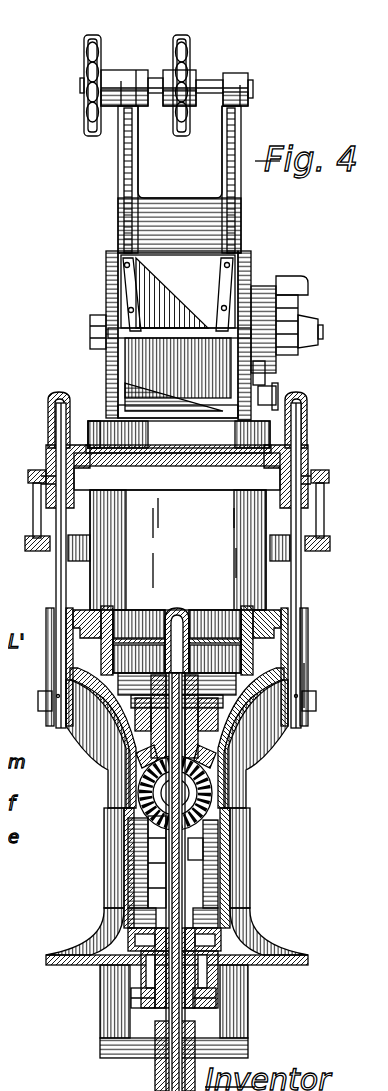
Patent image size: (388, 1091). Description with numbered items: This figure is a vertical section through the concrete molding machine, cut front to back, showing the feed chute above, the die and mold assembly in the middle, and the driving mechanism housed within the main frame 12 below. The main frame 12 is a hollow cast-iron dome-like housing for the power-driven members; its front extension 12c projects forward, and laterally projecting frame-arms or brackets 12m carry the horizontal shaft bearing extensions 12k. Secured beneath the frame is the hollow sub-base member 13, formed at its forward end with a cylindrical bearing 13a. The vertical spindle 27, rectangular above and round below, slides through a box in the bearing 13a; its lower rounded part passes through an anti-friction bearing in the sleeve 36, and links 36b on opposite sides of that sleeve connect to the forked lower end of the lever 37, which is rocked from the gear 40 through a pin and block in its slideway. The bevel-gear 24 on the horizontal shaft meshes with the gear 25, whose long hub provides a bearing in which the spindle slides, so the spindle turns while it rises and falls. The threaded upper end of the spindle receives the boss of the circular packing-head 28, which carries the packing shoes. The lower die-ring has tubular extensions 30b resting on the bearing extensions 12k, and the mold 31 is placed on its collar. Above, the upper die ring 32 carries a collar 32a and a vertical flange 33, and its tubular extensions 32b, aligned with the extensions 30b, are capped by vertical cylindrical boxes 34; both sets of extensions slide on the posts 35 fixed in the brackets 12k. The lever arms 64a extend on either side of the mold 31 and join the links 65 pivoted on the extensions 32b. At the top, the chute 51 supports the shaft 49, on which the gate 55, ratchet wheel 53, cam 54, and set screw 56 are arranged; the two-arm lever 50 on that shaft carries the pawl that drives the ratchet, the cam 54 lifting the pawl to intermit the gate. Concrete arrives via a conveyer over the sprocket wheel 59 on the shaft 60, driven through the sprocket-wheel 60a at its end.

The sprocket-wheel 60a is at (79, 128).
The sprocket wheel 59 is at (168, 128).
The shaft 60 is at (200, 86).
The chute 51 is at (233, 209).
The gate 55 is at (170, 335).
The ratchet wheel 53 is at (268, 360).
The 2-arm lever 50 is at (300, 283).
The shaft 49 is at (315, 325).
The cam 54 is at (257, 375).
The set screw 56 is at (265, 406).
The vertical cylindrical boxes 34 is at (40, 402).
The vertical flange 33 is at (80, 413).
The collar 32a is at (179, 435).
The tubular extensions 32b is at (300, 445).
The upper die ring 32 is at (148, 458).
The posts 35 is at (48, 575).
The mold 31 is at (178, 550).
The links 65 is at (312, 497).
The arms 64a is at (262, 530).
The tubular extensions 30b is at (300, 636).
The horizontal shaft bearing 12k is at (300, 670).
The circular packing-head 28 is at (198, 641).
The frame-arms or brackets 12m is at (67, 720).
The front extension 12c is at (222, 832).
The main frame 12 is at (240, 878).
The bevel-gear 24 is at (200, 790).
The gear 25 is at (205, 757).
The vertical spindle 27 is at (165, 845).
The gear 40 is at (190, 848).
The links 36b is at (205, 948).
The sleeve 36 is at (130, 958).
The lever 37 is at (190, 1005).
The hollow sub-base member 13 is at (232, 987).
The cylindrical bearing 13a is at (152, 1060).